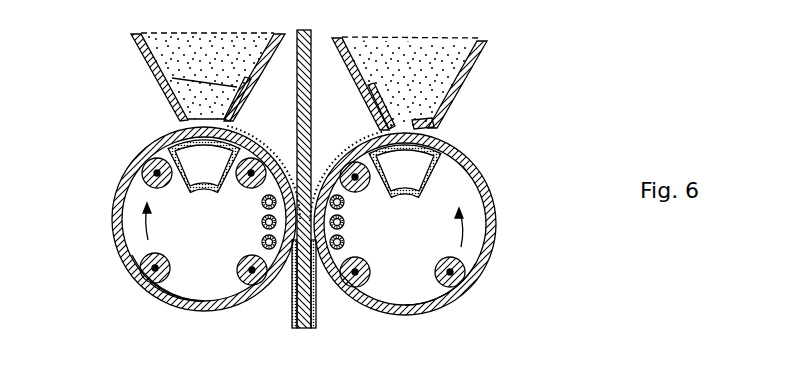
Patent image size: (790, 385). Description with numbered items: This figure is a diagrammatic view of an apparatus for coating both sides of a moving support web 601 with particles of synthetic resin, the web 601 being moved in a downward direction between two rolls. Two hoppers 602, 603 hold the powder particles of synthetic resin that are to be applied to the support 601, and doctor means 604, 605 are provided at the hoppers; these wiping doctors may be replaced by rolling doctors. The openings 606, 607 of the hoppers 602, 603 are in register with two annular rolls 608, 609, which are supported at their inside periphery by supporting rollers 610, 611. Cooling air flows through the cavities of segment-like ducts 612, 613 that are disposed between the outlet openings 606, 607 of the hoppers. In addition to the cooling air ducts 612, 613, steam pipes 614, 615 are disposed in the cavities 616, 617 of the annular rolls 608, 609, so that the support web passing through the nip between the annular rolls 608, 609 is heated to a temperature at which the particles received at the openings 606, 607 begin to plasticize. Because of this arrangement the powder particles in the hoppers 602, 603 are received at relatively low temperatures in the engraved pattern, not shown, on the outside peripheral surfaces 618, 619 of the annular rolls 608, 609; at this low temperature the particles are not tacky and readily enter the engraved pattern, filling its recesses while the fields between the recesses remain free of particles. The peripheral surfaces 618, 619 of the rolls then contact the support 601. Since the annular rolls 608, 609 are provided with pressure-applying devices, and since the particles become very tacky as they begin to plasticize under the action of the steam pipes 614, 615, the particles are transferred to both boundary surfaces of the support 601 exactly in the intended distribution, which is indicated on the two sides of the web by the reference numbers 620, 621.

The support web 601 is at (302, 296).
The hopper 602 is at (136, 47).
The hopper 603 is at (457, 98).
The doctor means 604 is at (172, 78).
The doctor means 605 is at (373, 92).
The hopper opening 606 is at (183, 118).
The hopper opening 607 is at (433, 121).
The annular roll 608 is at (114, 246).
The annular roll 609 is at (494, 246).
The supporting roller 610 is at (146, 176).
The supporting roller 611 is at (145, 262).
The segment-like duct 612 is at (145, 190).
The segment-like duct 613 is at (471, 196).
The steam pipe 614 is at (261, 204).
The steam pipe 615 is at (345, 204).
The cavity 616 is at (172, 285).
The cavity 617 is at (463, 257).
The outside peripheral surface 618 is at (152, 296).
The outside peripheral surface 619 is at (466, 298).
The particle distribution 620 is at (294, 300).
The particle distribution 621 is at (314, 308).